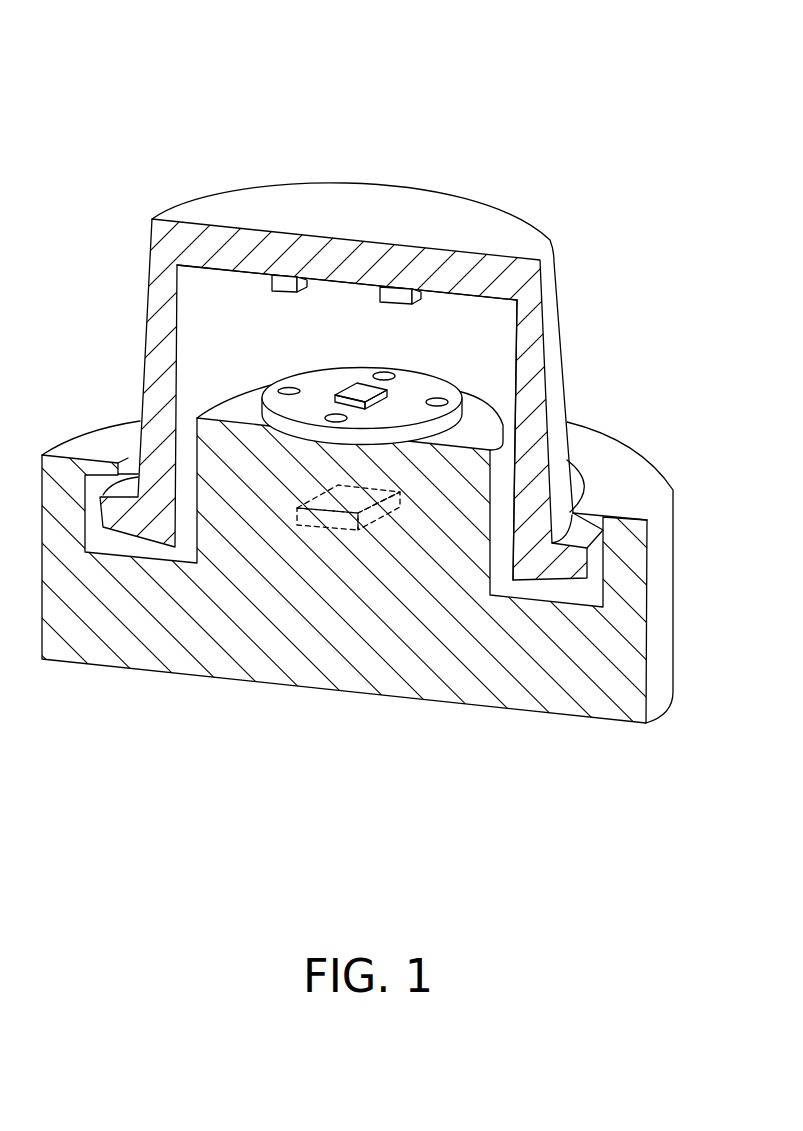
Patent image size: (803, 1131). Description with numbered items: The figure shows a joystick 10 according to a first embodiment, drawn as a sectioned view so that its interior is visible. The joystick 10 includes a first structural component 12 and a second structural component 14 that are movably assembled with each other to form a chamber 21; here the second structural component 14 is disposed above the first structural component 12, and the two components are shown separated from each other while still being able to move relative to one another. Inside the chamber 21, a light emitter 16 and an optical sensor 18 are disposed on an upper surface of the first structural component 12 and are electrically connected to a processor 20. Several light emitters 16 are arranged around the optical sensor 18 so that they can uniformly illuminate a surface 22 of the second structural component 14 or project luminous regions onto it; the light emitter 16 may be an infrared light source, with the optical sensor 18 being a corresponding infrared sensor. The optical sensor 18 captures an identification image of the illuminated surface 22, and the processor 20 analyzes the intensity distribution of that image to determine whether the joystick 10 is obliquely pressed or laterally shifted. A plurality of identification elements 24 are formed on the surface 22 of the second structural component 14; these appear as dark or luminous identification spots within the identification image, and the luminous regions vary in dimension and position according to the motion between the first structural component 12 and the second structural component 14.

The joystick 10 is at (401, 393).
The first structural component 12 is at (132, 650).
The second structural component 14 is at (478, 218).
The light emitter 16 is at (288, 386).
The optical sensor 18 is at (360, 390).
The processor 20 is at (318, 527).
The chamber 21 is at (482, 328).
The surface 22 is at (225, 270).
The identification elements 24 is at (288, 285).